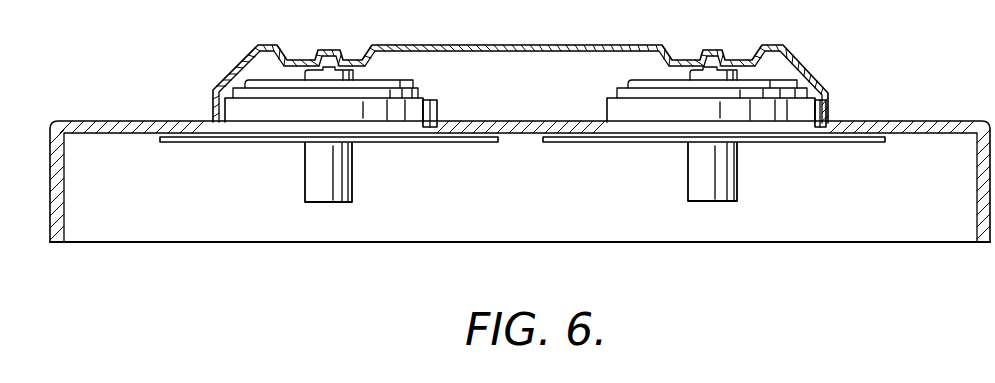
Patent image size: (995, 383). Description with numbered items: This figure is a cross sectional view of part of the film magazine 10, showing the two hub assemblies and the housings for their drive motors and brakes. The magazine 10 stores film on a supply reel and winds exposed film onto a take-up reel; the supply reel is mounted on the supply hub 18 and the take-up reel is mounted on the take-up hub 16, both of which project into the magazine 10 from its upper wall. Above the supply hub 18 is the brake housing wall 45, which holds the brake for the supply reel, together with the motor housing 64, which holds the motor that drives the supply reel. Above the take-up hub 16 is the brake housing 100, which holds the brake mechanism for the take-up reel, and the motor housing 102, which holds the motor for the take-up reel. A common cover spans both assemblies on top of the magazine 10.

The film magazine 10 is at (143, 120).
The brake housing 100 is at (785, 80).
The motor housing 102 is at (826, 110).
The motor housing 64 is at (437, 110).
The brake housing wall 45 is at (397, 79).
The supply hub 18 is at (340, 180).
The take-up hub 16 is at (725, 186).